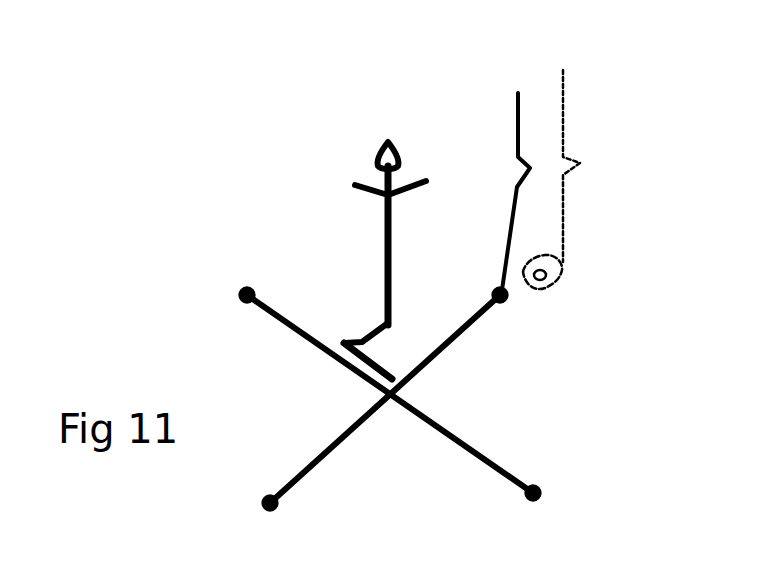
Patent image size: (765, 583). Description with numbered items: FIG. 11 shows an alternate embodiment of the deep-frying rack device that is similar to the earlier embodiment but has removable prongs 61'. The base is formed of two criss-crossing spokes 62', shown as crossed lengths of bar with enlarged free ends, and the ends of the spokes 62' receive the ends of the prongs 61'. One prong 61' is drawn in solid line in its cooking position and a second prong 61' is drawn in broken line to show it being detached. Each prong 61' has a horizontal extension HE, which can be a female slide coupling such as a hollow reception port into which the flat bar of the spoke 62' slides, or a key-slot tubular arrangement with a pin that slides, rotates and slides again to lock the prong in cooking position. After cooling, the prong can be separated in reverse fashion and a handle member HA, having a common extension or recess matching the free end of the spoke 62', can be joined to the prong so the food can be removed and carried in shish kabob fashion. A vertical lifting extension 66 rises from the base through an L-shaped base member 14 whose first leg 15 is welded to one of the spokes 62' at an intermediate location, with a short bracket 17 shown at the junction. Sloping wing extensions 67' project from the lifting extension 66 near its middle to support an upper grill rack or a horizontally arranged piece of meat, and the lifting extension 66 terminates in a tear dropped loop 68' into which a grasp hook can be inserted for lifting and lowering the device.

The spoke 62' is at (393, 414).
The bracket 17 is at (358, 337).
The lifting extension 66 is at (392, 237).
The sloping wing extensions 67' is at (411, 125).
The tear dropped loop 68' is at (367, 112).
The L-shaped base member 14 is at (380, 370).
The first leg 15 is at (392, 378).
The removable prongs 61' is at (566, 151).
The handle member HA is at (547, 284).
The horizontal extension HE is at (543, 289).